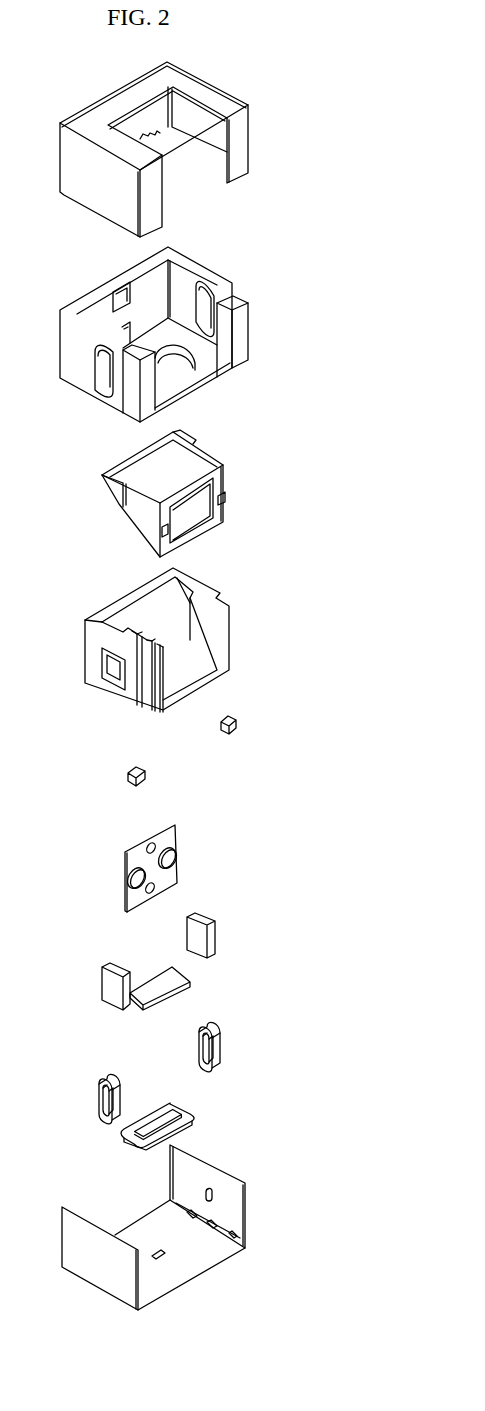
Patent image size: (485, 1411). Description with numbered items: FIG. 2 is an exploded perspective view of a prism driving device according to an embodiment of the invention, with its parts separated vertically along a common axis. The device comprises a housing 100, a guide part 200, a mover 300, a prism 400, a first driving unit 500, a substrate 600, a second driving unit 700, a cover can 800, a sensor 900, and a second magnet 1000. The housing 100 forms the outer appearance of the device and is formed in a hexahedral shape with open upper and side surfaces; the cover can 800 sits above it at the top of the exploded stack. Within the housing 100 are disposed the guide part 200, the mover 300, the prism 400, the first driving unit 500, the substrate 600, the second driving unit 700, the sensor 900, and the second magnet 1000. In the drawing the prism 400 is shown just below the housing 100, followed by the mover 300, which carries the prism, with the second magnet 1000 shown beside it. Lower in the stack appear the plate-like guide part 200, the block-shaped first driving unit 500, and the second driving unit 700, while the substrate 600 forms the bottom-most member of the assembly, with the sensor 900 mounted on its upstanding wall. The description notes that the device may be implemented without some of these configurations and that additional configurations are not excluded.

The housing 100 is at (243, 323).
The guide part 200 is at (125, 858).
The mover 300 is at (230, 632).
The prism 400 is at (223, 478).
The first driving unit 500 is at (215, 938).
The substrate 600 is at (247, 1217).
The second driving unit 700 is at (222, 1043).
The cover can 800 is at (250, 142).
The sensor 900 is at (210, 1190).
The second magnet 1000 is at (237, 723).